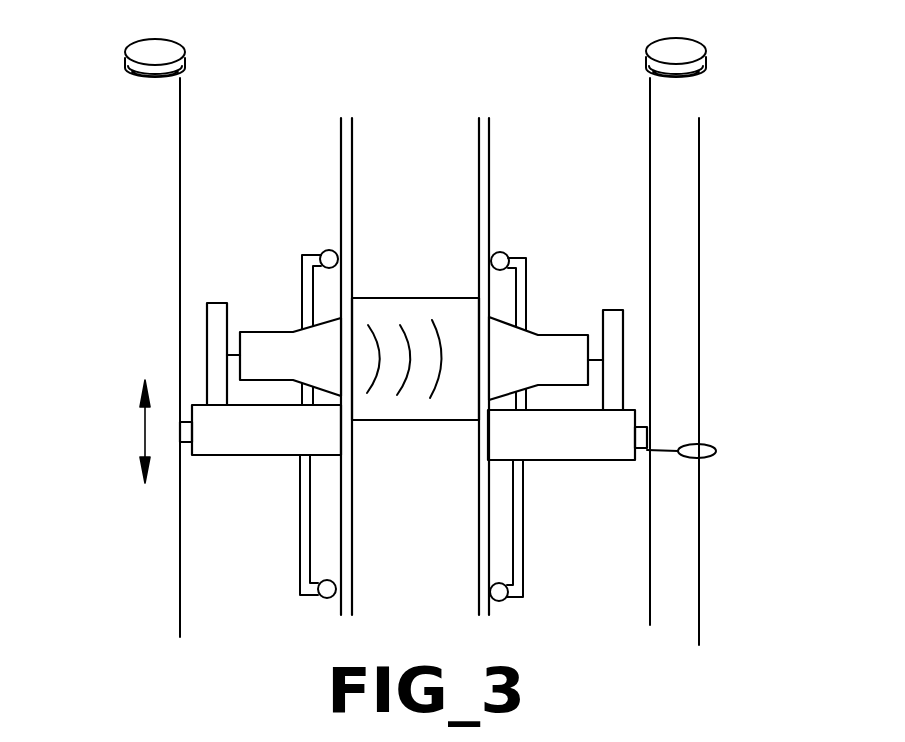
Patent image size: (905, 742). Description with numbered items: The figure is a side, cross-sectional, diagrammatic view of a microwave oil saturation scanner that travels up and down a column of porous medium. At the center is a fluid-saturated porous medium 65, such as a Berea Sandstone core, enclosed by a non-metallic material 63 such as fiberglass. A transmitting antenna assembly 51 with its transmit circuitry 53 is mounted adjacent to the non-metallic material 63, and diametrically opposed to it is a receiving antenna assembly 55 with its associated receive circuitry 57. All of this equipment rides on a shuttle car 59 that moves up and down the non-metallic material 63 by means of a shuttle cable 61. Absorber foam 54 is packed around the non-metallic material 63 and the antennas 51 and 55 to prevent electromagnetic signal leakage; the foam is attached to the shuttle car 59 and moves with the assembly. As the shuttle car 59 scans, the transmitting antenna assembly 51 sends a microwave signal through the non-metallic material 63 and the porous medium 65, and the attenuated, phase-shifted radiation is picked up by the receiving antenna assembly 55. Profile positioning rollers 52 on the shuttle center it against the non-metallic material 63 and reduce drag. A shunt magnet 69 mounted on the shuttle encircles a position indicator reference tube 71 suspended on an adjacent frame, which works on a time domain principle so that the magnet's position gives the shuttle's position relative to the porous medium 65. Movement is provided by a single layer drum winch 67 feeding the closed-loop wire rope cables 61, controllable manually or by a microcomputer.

The transmitting antenna assembly 51 is at (293, 328).
The profile positioning rollers 52 is at (298, 537).
The transmit circuitry 53 is at (207, 335).
The absorber foam 54 is at (412, 298).
The receiving antenna assembly 55 is at (535, 333).
The receive circuitry 57 is at (625, 330).
The shuttle car 59 is at (540, 462).
The shuttle cable 61 is at (179, 582).
The non-metallic material 63 is at (487, 180).
The fluid-saturated porous medium 65 is at (394, 173).
The single layer drum winch 67 is at (125, 50).
The shunt magnet 69 is at (716, 453).
The position indicator reference tube 71 is at (700, 383).